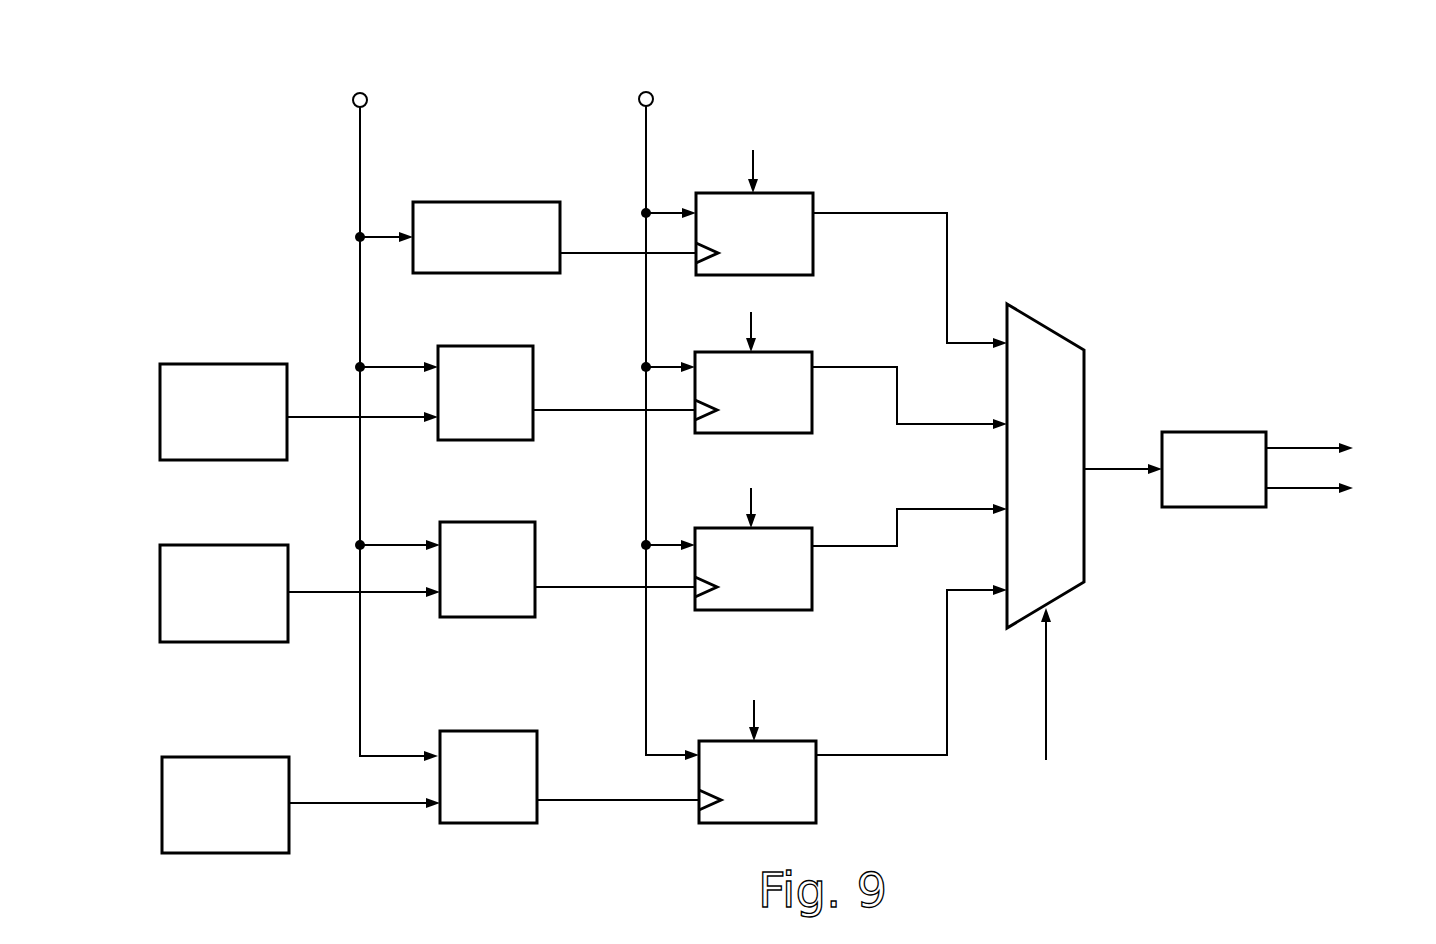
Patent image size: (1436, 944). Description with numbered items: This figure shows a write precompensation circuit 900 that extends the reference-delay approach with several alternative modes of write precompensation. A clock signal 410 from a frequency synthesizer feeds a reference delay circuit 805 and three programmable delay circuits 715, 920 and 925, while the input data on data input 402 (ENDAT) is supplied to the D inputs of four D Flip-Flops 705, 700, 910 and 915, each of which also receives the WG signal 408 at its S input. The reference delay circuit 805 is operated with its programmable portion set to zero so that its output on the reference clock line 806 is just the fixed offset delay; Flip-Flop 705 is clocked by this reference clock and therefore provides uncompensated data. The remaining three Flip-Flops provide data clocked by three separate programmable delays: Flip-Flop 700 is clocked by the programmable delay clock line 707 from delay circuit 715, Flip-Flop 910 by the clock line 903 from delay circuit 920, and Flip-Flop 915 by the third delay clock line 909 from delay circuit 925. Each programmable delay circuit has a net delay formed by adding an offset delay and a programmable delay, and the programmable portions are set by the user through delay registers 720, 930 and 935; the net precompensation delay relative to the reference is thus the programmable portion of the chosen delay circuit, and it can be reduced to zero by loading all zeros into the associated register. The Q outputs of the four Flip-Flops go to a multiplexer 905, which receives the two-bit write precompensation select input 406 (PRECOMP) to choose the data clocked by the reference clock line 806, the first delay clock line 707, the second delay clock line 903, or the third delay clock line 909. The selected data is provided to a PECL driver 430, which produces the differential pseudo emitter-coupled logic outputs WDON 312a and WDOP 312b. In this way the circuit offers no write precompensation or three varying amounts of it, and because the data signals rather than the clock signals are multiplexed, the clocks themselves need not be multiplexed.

The write precompensation circuit 900 is at (990, 158).
The clock signal 410 is at (358, 157).
The data input 402 is at (645, 157).
The reference delay circuit 805 is at (508, 201).
The reference clock line 806 is at (594, 250).
The WG signal 408 is at (752, 178).
The D Flip-Flop 705 is at (775, 192).
The delay register 720 is at (218, 364).
The programmable delay circuit 715 is at (498, 346).
The programmable delay clock line 707 is at (585, 410).
The D Flip-Flop 700 is at (750, 433).
The delay register 930 is at (218, 545).
The programmable delay circuit 920 is at (498, 522).
The programmable delay 2 output 903 is at (585, 587).
The D Flip-Flop 910 is at (750, 610).
The delay register 935 is at (220, 757).
The programmable delay circuit 925 is at (498, 731).
The Delay 3 clock line 909 is at (588, 800).
The D Flip-Flop 915 is at (753, 823).
The multiplexer 905 is at (1047, 327).
The write precompensation select input 406 is at (1046, 715).
The PECL driver 430 is at (1207, 432).
The WDOP output 312b is at (1300, 448).
The WDON output 312a is at (1300, 488).